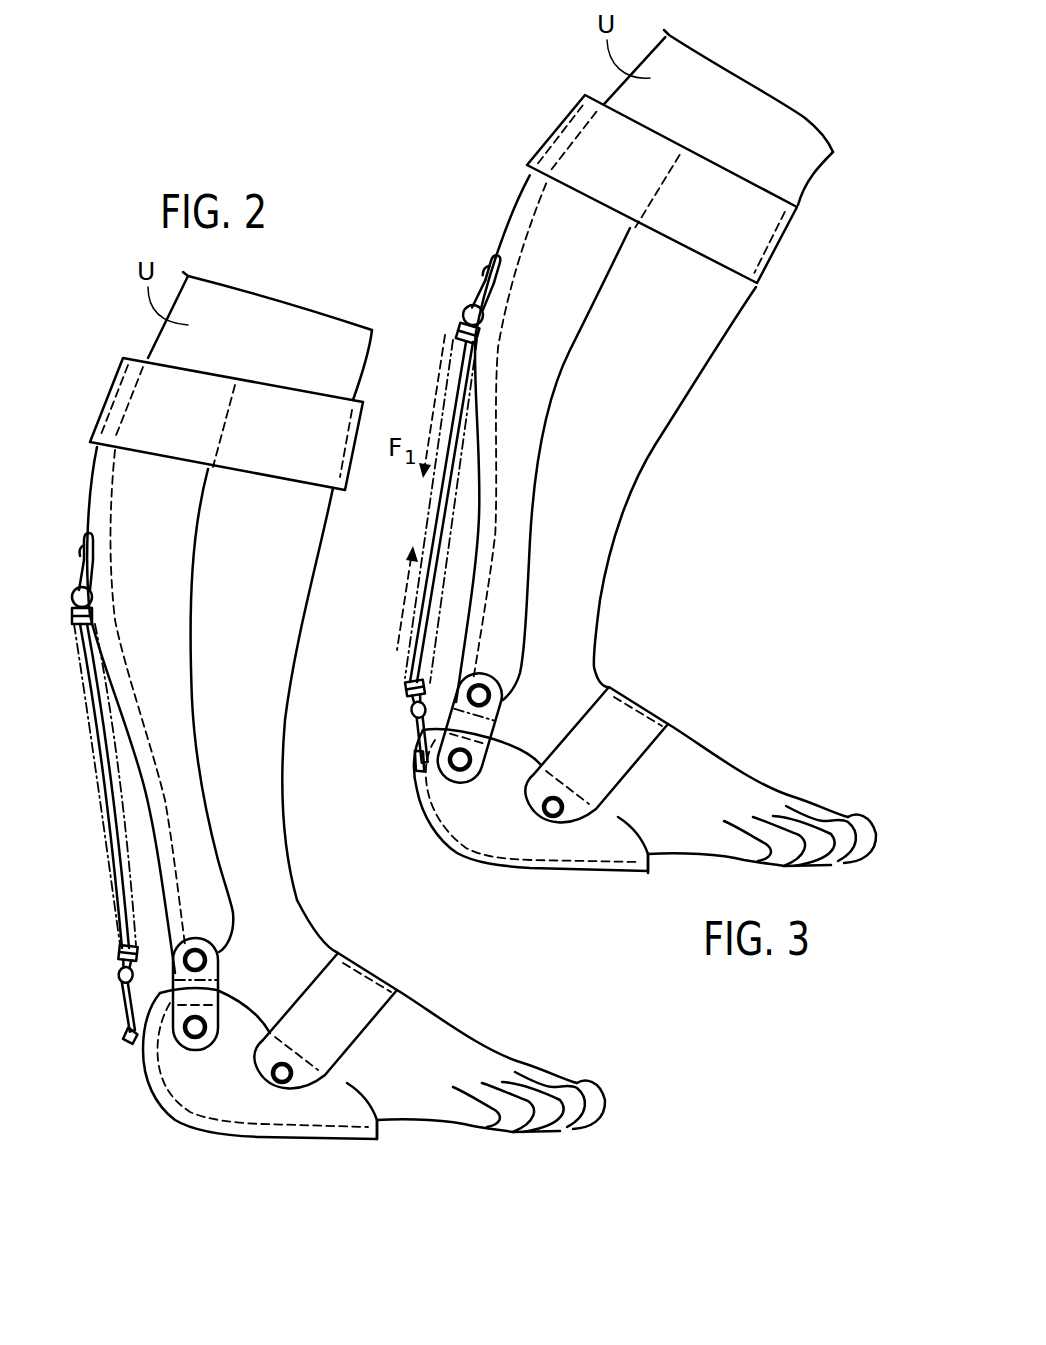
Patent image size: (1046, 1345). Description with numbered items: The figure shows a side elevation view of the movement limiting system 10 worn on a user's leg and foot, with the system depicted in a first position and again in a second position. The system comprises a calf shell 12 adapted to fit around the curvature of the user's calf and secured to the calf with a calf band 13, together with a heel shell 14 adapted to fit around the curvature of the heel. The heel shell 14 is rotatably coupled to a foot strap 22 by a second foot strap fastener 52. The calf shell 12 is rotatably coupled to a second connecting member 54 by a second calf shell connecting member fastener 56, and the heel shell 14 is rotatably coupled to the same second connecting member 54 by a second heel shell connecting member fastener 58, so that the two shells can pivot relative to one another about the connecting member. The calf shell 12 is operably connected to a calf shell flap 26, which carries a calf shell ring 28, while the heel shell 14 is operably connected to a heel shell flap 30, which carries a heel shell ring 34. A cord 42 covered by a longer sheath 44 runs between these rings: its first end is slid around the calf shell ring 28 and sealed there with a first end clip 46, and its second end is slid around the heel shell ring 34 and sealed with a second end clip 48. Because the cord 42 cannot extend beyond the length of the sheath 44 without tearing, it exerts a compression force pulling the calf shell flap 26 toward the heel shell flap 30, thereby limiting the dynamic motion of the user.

In FIG. 2, the movement limiting system 10 is at (170, 1134).
In FIG. 3, the movement limiting system 10 is at (437, 867).
In FIG. 2, the calf shell 12 is at (162, 613).
In FIG. 3, the calf shell 12 is at (551, 333).
In FIG. 2, the calf band 13 is at (105, 402).
In FIG. 3, the calf band 13 is at (553, 128).
In FIG. 2, the heel shell 14 is at (227, 1133).
In FIG. 3, the heel shell 14 is at (492, 867).
In FIG. 2, the foot strap 22 is at (338, 1020).
In FIG. 3, the foot strap 22 is at (610, 750).
In FIG. 2, the calf shell flap 26 is at (82, 548).
In FIG. 3, the calf shell flap 26 is at (488, 265).
In FIG. 2, the calf shell ring 28 is at (78, 582).
In FIG. 3, the calf shell ring 28 is at (470, 295).
In FIG. 2, the heel shell flap 30 is at (131, 1022).
In FIG. 3, the heel shell flap 30 is at (398, 755).
In FIG. 2, the heel shell ring 34 is at (128, 995).
In FIG. 3, the heel shell ring 34 is at (408, 728).
In FIG. 2, the cord 42 is at (112, 792).
In FIG. 3, the cord 42 is at (445, 522).
In FIG. 2, the sheath 44 is at (107, 880).
In FIG. 3, the sheath 44 is at (408, 653).
In FIG. 2, the first end clip 46 is at (72, 613).
In FIG. 3, the first end clip 46 is at (462, 325).
In FIG. 2, the second end clip 48 is at (120, 955).
In FIG. 3, the second end clip 48 is at (408, 687).
In FIG. 2, the second foot strap fastener 52 is at (283, 1082).
In FIG. 3, the second foot strap fastener 52 is at (547, 810).
In FIG. 2, the second connecting member 54 is at (187, 993).
In FIG. 3, the second connecting member 54 is at (600, 680).
In FIG. 2, the second calf shell connecting member fastener 56 is at (197, 958).
In FIG. 3, the second calf shell connecting member fastener 56 is at (478, 690).
In FIG. 2, the second heel shell connecting member fastener 58 is at (195, 1037).
In FIG. 3, the second heel shell connecting member fastener 58 is at (463, 770).